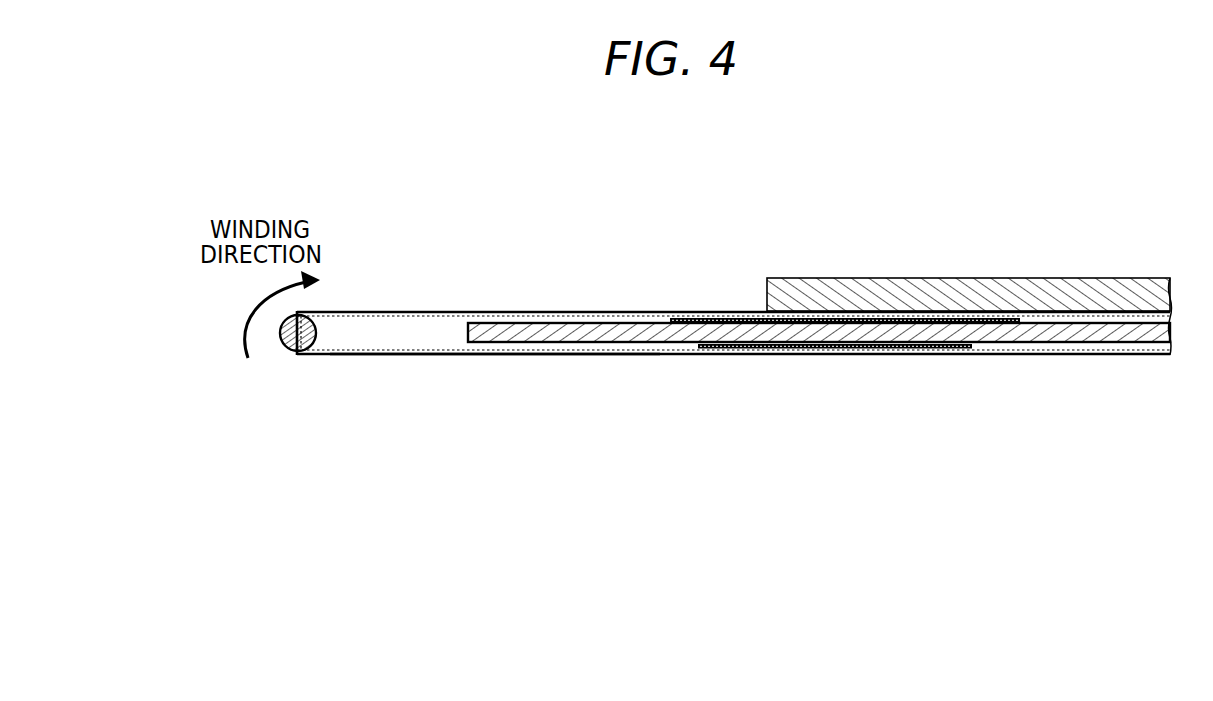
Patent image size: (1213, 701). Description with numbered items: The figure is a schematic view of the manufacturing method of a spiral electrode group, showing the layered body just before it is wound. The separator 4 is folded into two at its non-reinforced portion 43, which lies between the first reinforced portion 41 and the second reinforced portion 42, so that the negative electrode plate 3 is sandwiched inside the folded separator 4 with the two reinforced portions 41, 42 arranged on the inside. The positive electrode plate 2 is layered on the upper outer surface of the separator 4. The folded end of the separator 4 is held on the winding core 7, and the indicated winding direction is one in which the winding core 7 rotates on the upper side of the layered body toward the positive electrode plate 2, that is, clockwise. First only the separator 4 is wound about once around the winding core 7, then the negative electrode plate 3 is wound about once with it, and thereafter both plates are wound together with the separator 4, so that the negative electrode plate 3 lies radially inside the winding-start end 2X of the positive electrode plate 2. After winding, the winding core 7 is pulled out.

The positive electrode plate 2 is at (905, 292).
The winding-start end of the positive electrode plate 2X is at (782, 275).
The negative electrode plate 3 is at (583, 328).
The separator 4 is at (397, 312).
The first reinforced portion 41 is at (740, 313).
The second reinforced portion 42 is at (857, 353).
The non-reinforced portion 43 is at (373, 357).
The winding core 7 is at (287, 350).